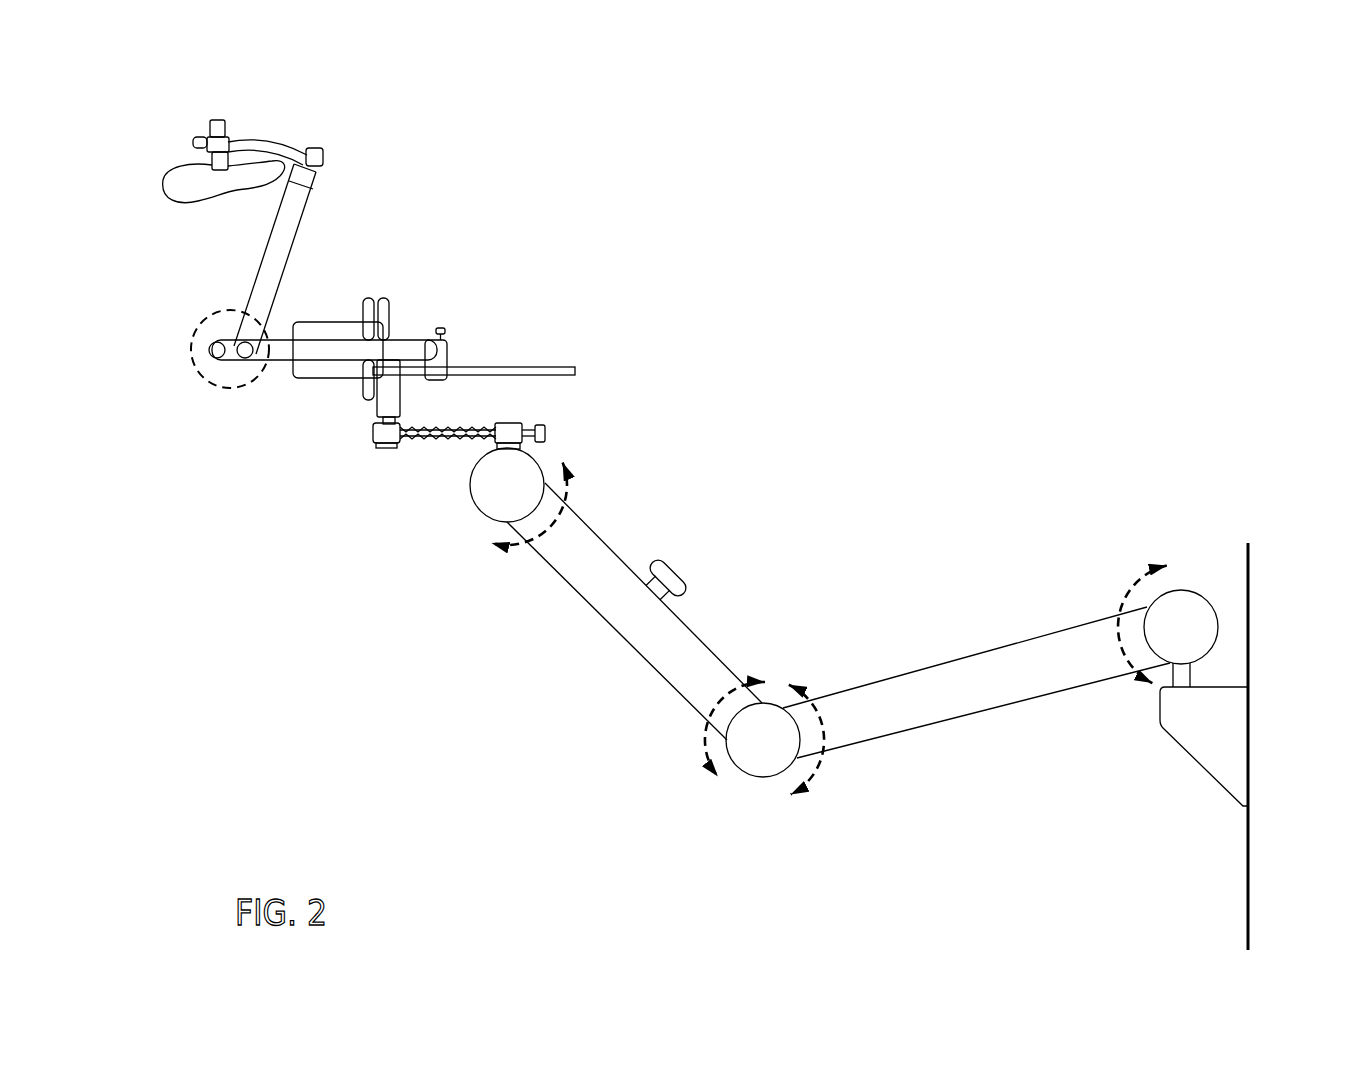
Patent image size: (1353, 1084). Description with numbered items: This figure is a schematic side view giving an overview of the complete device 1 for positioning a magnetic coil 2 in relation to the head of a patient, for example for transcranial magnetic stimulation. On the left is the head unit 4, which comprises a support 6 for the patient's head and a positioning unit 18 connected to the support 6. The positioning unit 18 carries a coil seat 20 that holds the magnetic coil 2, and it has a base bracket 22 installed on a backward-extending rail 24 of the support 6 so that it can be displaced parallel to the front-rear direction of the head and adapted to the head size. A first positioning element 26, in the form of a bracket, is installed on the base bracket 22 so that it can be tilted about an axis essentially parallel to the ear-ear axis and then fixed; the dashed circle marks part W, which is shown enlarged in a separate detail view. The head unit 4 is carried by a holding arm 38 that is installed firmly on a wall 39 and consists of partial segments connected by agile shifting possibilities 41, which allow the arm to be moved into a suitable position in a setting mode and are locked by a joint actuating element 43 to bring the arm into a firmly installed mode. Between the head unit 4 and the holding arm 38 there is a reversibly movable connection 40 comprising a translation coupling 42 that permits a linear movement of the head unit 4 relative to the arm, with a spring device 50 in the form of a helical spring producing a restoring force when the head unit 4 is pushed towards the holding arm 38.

The device 1 is at (851, 113).
The magnetic coil 2 is at (205, 192).
The head unit 4 is at (214, 470).
The support 6 is at (337, 394).
The positioning unit 18 is at (341, 280).
The coil seat 20 is at (234, 115).
The base bracket 22 is at (284, 360).
The rail 24 is at (542, 372).
The first positioning element 26 is at (300, 218).
The holding arm 38 is at (836, 518).
The wall 39 is at (1250, 578).
The reversibly movable connection 40 is at (382, 482).
The agile shifting possibilities 41 is at (508, 505).
The translation coupling 42 is at (422, 454).
The joint actuating element 43 is at (672, 567).
The spring device 50 is at (478, 430).
The part W is at (217, 346).